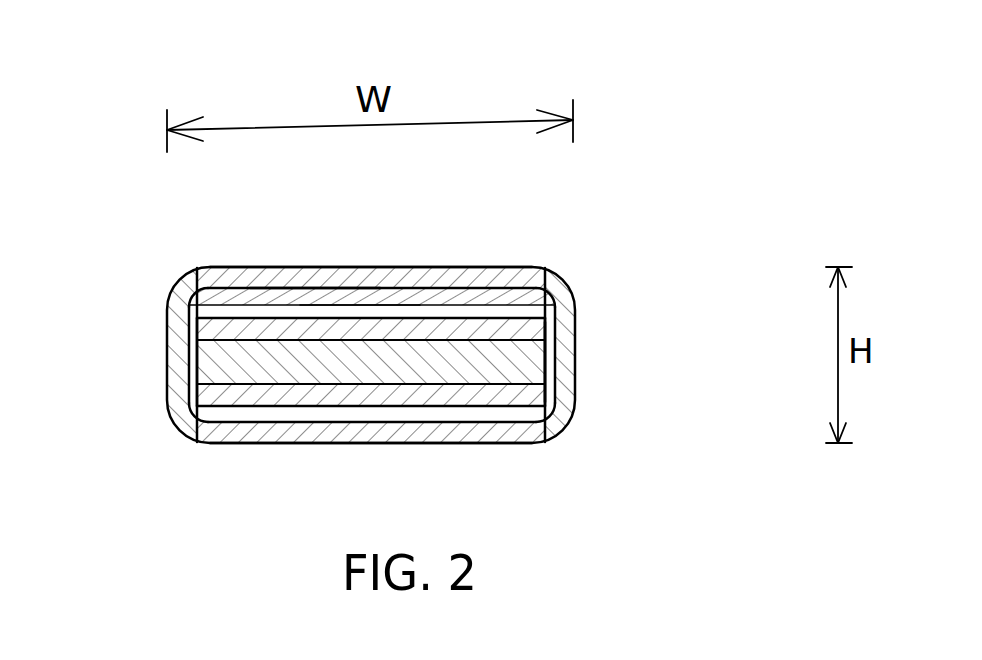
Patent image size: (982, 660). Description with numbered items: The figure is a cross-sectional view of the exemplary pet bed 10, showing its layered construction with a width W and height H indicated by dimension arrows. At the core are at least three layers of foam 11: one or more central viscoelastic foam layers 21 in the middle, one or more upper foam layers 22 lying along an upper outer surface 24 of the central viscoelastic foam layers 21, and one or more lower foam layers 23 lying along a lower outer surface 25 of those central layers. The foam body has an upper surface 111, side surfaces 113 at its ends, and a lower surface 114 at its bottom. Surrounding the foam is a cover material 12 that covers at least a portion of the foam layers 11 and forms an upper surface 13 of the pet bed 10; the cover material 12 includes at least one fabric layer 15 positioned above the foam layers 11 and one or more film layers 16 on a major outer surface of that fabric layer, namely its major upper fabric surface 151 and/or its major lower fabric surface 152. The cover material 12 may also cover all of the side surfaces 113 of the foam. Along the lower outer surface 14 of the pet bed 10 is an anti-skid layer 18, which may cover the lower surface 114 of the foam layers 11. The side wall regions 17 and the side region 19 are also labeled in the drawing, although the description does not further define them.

The pet bed 10 is at (665, 252).
The at least three layers of foam 11 is at (403, 358).
The cover material 12 is at (540, 268).
The upper surface 13 is at (262, 266).
The lower outer surface 14 is at (232, 443).
The fabric layer 15 is at (382, 276).
The film layer 16 is at (448, 298).
The side wall 17 is at (177, 308).
The anti-skid layer 18 is at (522, 436).
The side surface of core 19 is at (548, 364).
The central viscoelastic foam layer 21 is at (213, 362).
The upper foam layer 22 is at (217, 328).
The lower foam layer 23 is at (207, 400).
The upper outer surface 24 is at (523, 338).
The lower outer surface 25 is at (302, 385).
The upper surface 111 is at (507, 317).
The side surfaces 113 is at (197, 375).
The lower surface 114 is at (453, 407).
The major upper fabric surface 151 is at (313, 267).
The major lower fabric surface 152 is at (329, 292).